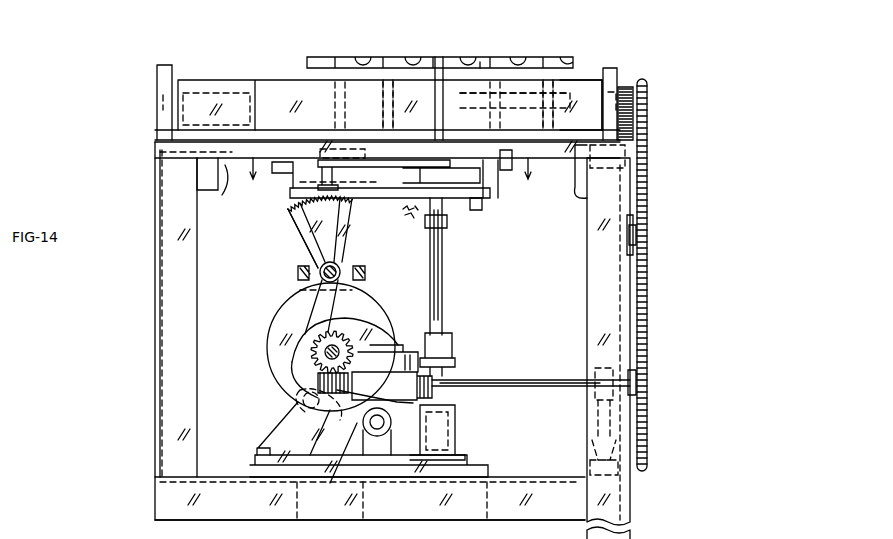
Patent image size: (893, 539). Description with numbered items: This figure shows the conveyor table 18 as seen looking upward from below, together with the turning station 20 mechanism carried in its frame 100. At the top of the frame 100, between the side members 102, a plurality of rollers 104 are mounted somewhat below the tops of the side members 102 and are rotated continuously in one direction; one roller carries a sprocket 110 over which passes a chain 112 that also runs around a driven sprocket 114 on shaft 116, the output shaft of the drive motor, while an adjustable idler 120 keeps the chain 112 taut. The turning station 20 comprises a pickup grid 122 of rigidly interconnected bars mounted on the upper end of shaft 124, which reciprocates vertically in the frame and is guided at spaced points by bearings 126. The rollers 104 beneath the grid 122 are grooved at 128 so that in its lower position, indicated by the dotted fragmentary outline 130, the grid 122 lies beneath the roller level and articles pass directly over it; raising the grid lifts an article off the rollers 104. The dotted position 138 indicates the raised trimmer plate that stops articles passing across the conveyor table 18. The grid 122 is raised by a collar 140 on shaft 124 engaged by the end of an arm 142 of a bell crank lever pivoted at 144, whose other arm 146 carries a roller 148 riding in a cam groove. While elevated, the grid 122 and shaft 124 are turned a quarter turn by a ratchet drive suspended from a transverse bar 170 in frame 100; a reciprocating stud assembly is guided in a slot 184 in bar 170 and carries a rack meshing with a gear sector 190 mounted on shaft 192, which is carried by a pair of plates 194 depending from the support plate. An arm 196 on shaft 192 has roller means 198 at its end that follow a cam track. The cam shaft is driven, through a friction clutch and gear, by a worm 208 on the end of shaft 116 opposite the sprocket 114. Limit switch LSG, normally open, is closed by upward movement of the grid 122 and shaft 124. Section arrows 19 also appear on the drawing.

The conveyor table 18 is at (293, 61).
The section line arrows 19 is at (391, 177).
The turning station 20 is at (347, 62).
The frame 100 is at (612, 306).
The side members 102 is at (170, 70).
The rollers 104 is at (580, 92).
The sprocket 110 is at (636, 112).
The chain 112 is at (648, 190).
The driven sprocket 114 is at (638, 380).
The shaft 116 is at (560, 388).
The adjustable idler 120 is at (640, 234).
The pickup grid 122 is at (468, 60).
The shaft 124 is at (440, 250).
The bearings 126 is at (462, 202).
The grooves 128 is at (393, 88).
The dotted fragmentary outline 130 is at (512, 94).
The dotted position of trimmer plate 138 is at (513, 534).
The collar 140 is at (433, 344).
The arm 142 is at (428, 392).
The pivot 144 is at (379, 432).
The arm 146 is at (337, 464).
The roller 148 is at (292, 410).
The transverse bar 170 is at (212, 187).
The slot 184 is at (345, 150).
The gear sector 190 is at (306, 230).
The shaft 192 is at (341, 270).
The plates 194 is at (304, 250).
The arm 196 is at (318, 296).
The roller means 198 is at (305, 352).
The worm 208 is at (316, 384).
The limit switch LSG is at (410, 216).